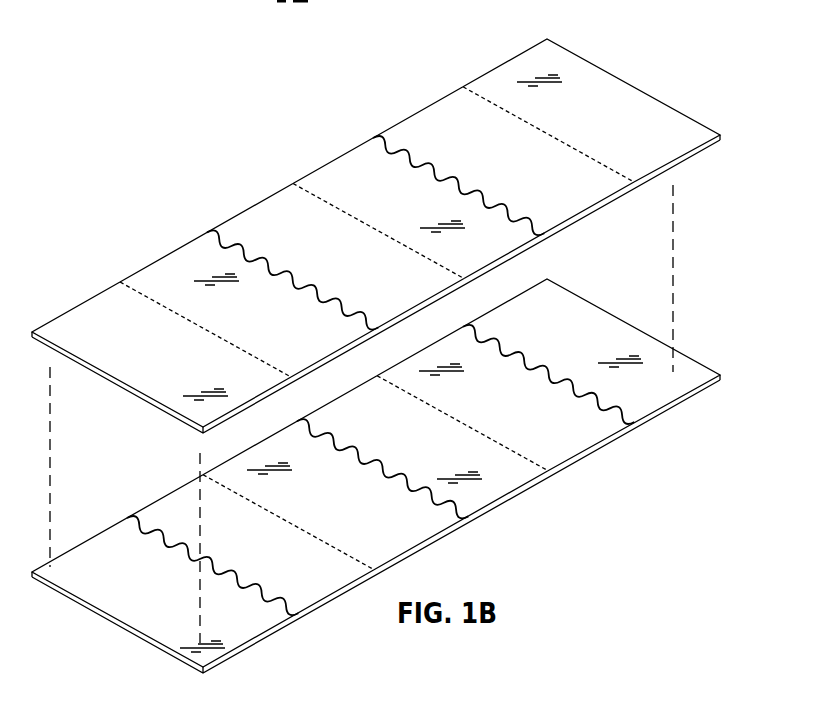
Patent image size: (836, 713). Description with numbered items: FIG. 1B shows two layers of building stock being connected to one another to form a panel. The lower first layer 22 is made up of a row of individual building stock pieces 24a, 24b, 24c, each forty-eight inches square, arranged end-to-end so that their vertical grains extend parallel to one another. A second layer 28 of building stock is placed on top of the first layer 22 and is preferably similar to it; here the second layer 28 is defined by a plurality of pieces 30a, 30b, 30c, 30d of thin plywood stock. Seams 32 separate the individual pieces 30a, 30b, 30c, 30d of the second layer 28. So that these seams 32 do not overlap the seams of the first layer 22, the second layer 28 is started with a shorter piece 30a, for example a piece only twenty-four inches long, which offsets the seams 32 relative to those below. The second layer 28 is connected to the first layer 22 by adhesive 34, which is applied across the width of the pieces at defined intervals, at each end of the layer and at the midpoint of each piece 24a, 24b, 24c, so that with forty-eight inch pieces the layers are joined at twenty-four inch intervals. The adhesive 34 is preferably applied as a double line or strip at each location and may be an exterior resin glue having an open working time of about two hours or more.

The first layer 22 is at (382, 482).
The building stock piece 24a is at (250, 632).
The building stock piece 24b is at (500, 488).
The building stock piece 24c is at (672, 393).
The second layer 28 is at (386, 218).
The piece of thin plywood stock 30a is at (87, 308).
The piece of thin plywood stock 30b is at (262, 212).
The piece of thin plywood stock 30c is at (437, 108).
The piece of thin plywood stock 30d is at (534, 57).
The seams 32 is at (135, 287).
The adhesive 34 is at (207, 233).